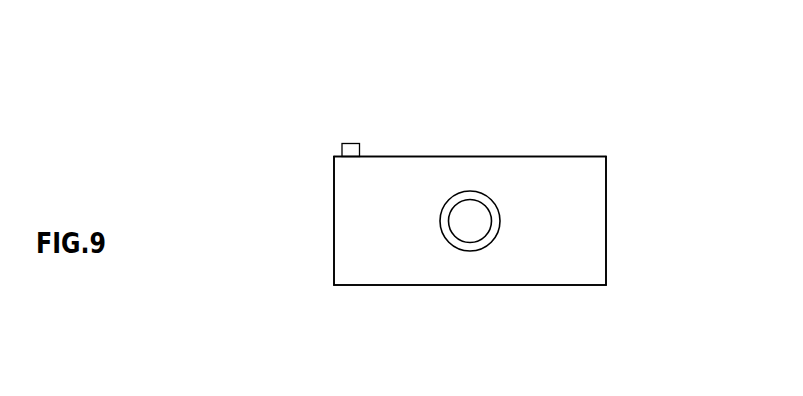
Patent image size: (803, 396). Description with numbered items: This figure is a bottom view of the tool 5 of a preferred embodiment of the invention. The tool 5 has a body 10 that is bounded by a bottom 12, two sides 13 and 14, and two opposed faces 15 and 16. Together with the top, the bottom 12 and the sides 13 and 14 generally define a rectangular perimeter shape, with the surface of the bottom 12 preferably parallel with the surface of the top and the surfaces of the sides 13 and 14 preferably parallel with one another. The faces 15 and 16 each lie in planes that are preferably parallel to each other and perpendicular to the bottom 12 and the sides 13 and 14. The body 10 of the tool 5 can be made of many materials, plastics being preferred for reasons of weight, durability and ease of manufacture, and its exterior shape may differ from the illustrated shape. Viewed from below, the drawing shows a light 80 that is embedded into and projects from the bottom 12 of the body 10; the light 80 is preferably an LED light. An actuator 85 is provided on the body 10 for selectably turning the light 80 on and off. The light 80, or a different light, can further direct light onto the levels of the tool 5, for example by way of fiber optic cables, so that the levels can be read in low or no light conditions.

The tool 5 is at (572, 87).
The body 10 is at (606, 174).
The bottom 12 is at (378, 278).
The side 13 is at (606, 232).
The side 14 is at (334, 197).
The face 15 is at (522, 169).
The face 16 is at (432, 285).
The light 80 is at (497, 236).
The actuator 85 is at (350, 156).